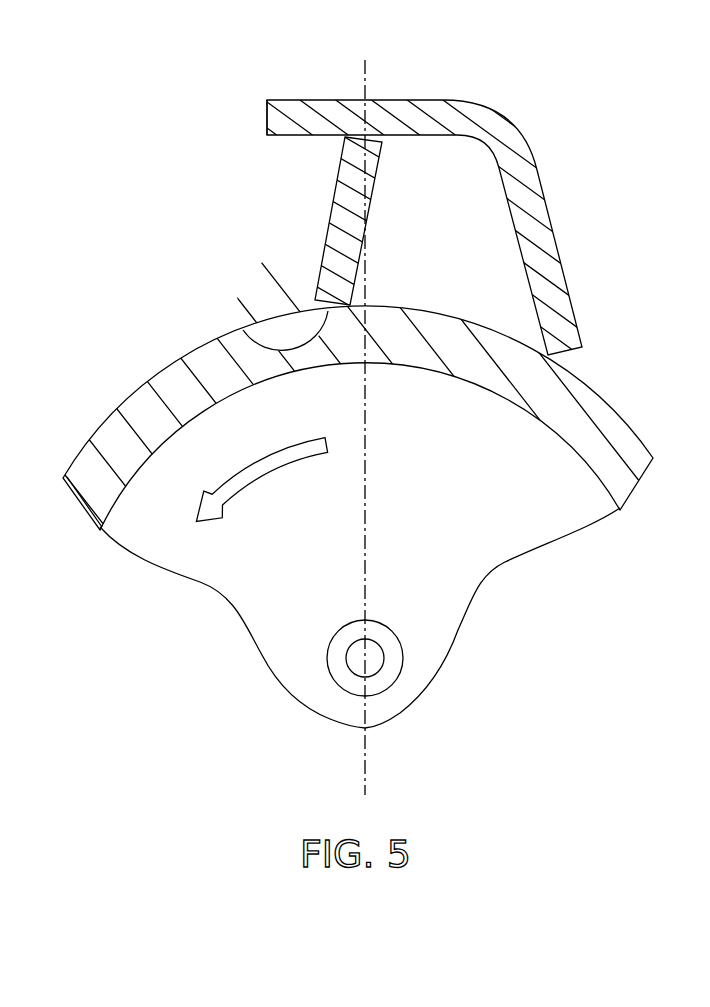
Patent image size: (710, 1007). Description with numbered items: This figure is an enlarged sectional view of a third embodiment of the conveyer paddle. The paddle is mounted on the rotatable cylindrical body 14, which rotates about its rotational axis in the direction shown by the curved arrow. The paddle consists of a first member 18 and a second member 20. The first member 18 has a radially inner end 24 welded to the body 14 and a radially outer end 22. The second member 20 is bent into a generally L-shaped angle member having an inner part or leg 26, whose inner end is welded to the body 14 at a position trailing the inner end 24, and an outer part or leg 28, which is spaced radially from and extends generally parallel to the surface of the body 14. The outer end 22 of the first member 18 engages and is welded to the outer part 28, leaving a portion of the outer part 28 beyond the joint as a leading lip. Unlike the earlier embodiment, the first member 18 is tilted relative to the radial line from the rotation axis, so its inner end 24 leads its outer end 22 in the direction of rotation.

The rotatable cylindrical body 14 is at (197, 350).
The first member 18 is at (311, 230).
The second member 20 is at (446, 180).
The radially outer end 22 is at (378, 148).
The radially inner end 24 is at (255, 338).
The inner part or leg 26 is at (556, 234).
The outer part or leg 28 is at (282, 135).